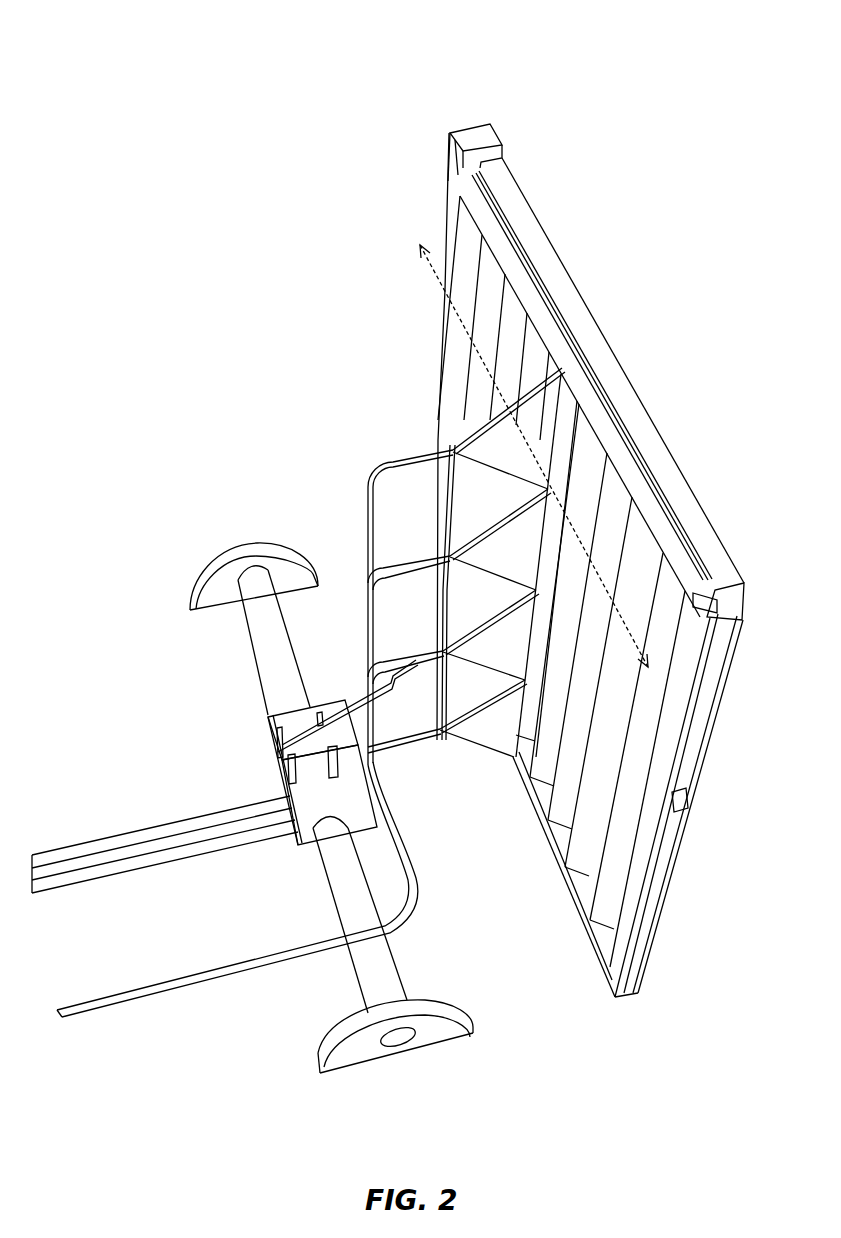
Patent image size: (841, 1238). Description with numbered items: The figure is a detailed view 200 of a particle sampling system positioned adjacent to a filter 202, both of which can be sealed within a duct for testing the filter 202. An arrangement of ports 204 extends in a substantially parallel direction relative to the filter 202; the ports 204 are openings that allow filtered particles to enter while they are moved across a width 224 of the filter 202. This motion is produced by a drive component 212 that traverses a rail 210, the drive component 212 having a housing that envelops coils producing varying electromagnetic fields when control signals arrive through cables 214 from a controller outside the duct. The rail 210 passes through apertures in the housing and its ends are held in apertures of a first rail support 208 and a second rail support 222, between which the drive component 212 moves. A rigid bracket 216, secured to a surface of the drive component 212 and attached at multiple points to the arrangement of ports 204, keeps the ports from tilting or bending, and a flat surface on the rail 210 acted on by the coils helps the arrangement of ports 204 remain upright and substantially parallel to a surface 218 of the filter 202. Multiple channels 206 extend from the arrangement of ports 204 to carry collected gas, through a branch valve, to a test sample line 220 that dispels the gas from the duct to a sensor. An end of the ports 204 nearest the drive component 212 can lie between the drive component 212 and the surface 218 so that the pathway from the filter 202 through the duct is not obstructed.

The detailed view 200 is at (96, 78).
The filter 202 is at (418, 205).
The arrangement of ports 204 is at (470, 410).
The channels 206 is at (386, 458).
The first rail support 208 is at (200, 570).
The rail 210 is at (265, 683).
The drive component 212 is at (275, 775).
The cables 214 is at (153, 825).
The bracket 216 is at (395, 697).
The surface of the filter 218 is at (577, 807).
The test sample line 220 is at (190, 975).
The second rail support 222 is at (320, 1060).
The width of the filter 224 is at (437, 275).